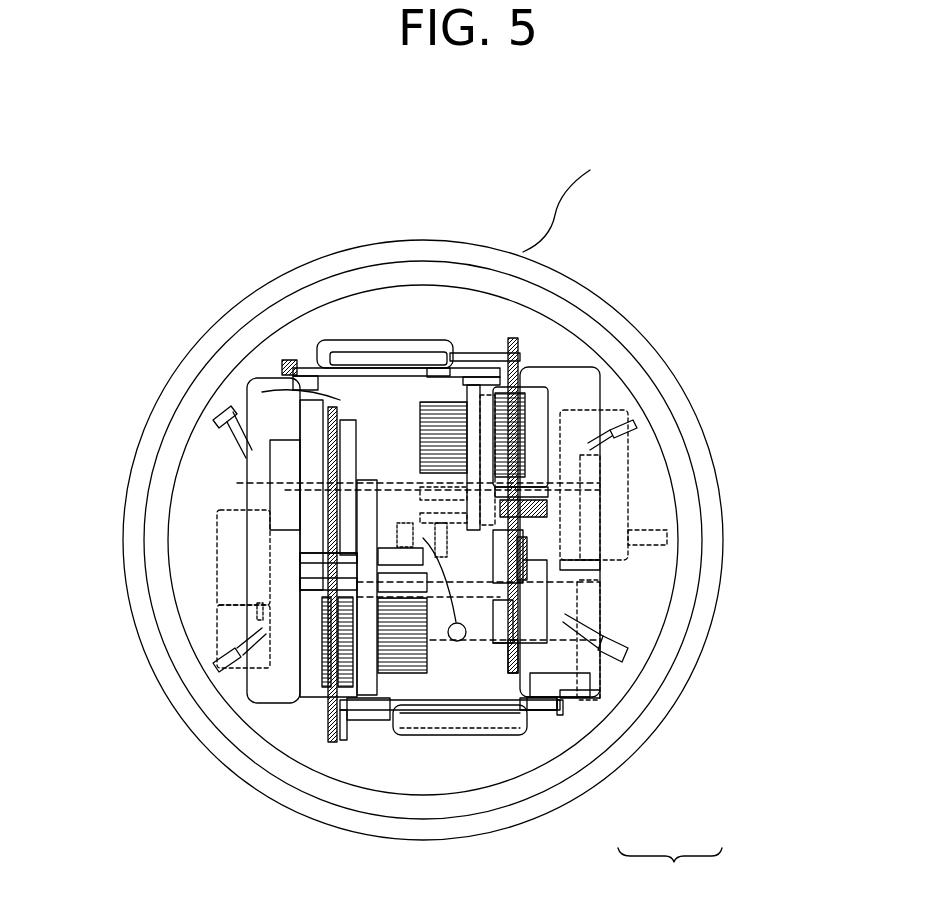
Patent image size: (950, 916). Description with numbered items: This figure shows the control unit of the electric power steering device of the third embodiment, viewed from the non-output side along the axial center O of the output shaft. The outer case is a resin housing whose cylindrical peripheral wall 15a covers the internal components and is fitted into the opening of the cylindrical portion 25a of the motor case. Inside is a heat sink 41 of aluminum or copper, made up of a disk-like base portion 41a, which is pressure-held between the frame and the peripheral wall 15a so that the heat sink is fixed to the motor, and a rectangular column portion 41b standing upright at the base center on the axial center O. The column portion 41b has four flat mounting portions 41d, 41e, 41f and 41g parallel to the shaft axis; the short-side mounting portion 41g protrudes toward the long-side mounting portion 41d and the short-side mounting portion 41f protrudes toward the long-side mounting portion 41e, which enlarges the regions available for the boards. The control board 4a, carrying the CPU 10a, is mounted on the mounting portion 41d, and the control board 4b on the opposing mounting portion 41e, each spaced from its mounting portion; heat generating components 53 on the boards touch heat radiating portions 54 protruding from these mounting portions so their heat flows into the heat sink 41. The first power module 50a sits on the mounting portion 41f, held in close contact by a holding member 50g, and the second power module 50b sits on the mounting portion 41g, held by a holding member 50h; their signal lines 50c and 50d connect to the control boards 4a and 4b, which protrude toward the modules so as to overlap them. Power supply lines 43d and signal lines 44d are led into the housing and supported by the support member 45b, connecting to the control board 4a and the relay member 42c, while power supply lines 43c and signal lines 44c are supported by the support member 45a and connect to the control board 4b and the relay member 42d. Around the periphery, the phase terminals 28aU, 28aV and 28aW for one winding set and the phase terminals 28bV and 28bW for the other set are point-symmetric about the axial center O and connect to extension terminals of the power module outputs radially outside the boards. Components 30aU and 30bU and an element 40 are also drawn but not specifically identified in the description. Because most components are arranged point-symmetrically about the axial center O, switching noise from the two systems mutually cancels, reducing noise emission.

The peripheral wall 15a is at (407, 815).
The cylindrical portion 25a is at (571, 198).
The top plate 40 is at (345, 387).
The mounting portion 41g is at (397, 368).
The holding member 50h is at (362, 385).
The power supply lines 43c is at (583, 390).
The control board 4b is at (512, 340).
The support member 45a is at (470, 390).
The signal lines 44c is at (430, 398).
The power module 50b is at (445, 400).
The signal lines 50d is at (490, 395).
The heat radiating portions 54 is at (340, 420).
The control board 4a is at (262, 392).
The heat generating components 53 is at (308, 465).
The power supply lines 43d is at (337, 690).
The terminal 30bU is at (283, 360).
The terminal 30aU is at (627, 483).
The phase terminal 28aW is at (625, 415).
The phase terminal 28aV is at (630, 532).
The phase terminal 28aU is at (630, 655).
The relay member 42c is at (250, 467).
The mounting portion 41d is at (263, 484).
The CPU 10a is at (300, 510).
The mounting portion 41e is at (593, 596).
The axial center O is at (444, 589).
The phase terminal 28bV is at (220, 590).
The phase terminal 28bW is at (290, 600).
The signal lines 44d is at (360, 687).
The support member 45b is at (373, 720).
The signal lines 50c is at (400, 690).
The holding member 50g is at (400, 730).
The power module 50a is at (433, 720).
The mounting portion 41f is at (530, 715).
The column portion 41b is at (575, 715).
The base portion 41a is at (572, 712).
The heat sink 41 is at (670, 871).
The relay member 42d is at (577, 700).